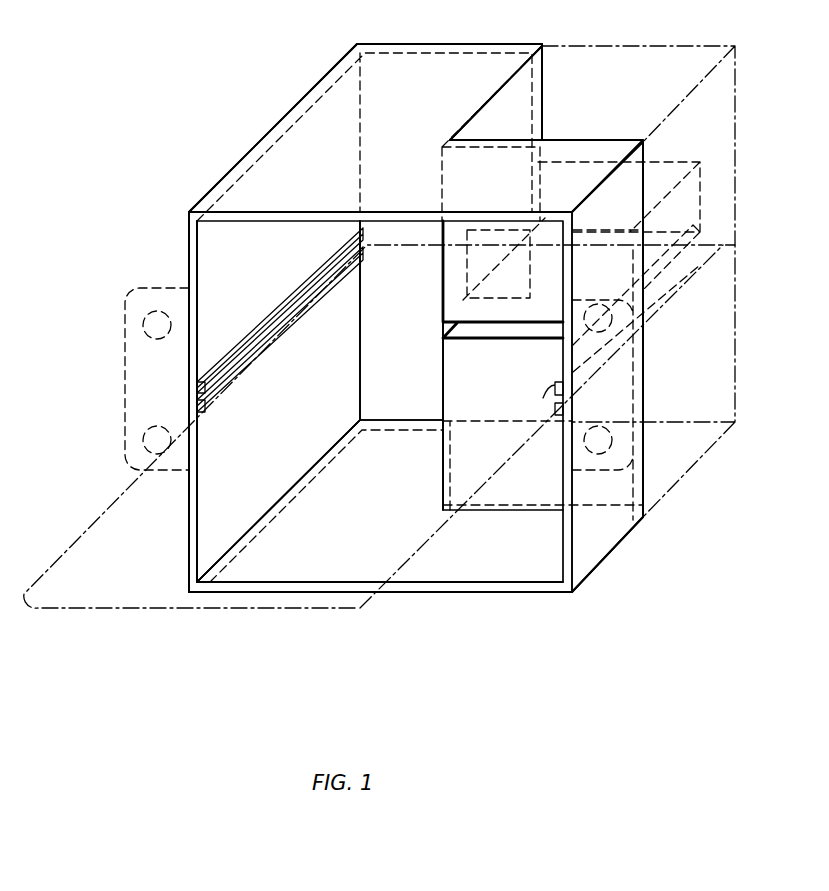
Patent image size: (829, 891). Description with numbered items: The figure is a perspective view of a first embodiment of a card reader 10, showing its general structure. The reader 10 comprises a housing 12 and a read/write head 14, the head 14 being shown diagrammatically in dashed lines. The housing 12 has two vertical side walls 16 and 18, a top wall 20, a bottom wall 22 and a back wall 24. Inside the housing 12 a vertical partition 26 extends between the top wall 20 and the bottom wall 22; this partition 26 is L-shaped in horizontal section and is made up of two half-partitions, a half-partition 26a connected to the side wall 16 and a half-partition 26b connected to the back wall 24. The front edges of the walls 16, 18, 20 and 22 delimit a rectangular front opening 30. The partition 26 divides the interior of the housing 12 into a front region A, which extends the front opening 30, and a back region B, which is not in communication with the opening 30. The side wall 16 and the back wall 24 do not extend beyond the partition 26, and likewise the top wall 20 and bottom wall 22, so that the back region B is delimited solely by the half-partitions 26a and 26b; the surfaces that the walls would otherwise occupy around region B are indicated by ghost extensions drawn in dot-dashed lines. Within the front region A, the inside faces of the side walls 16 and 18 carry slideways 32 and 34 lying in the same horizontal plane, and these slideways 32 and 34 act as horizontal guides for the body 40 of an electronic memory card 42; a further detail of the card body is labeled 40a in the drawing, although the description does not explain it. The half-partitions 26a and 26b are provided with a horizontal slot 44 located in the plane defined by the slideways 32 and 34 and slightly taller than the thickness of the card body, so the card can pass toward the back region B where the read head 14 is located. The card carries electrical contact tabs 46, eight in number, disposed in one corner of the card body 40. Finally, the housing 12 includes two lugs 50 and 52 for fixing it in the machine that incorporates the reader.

The card reader 10 is at (600, 577).
The housing 12 is at (480, 598).
The read/write head 14 is at (690, 210).
The side wall 16 is at (632, 484).
The side wall 18 is at (190, 510).
The top wall 20 is at (318, 120).
The bottom wall 22 is at (330, 582).
The back wall 24 is at (437, 62).
The partition 26 is at (555, 138).
The half-partition 26a is at (620, 140).
The half-partition 26b is at (508, 70).
The front opening 30 is at (252, 502).
The slideway 32 is at (300, 290).
The slideway 34 is at (548, 405).
The card body 40 is at (368, 505).
The inner partition wall 40a is at (432, 222).
The horizontal slot 44 is at (443, 280).
The electrical contact tabs 46 is at (660, 245).
The lug 50 is at (126, 342).
The lug 52 is at (640, 386).
The electronic memory card 42 is at (133, 610).
The front region A is at (210, 252).
The back region B is at (612, 62).